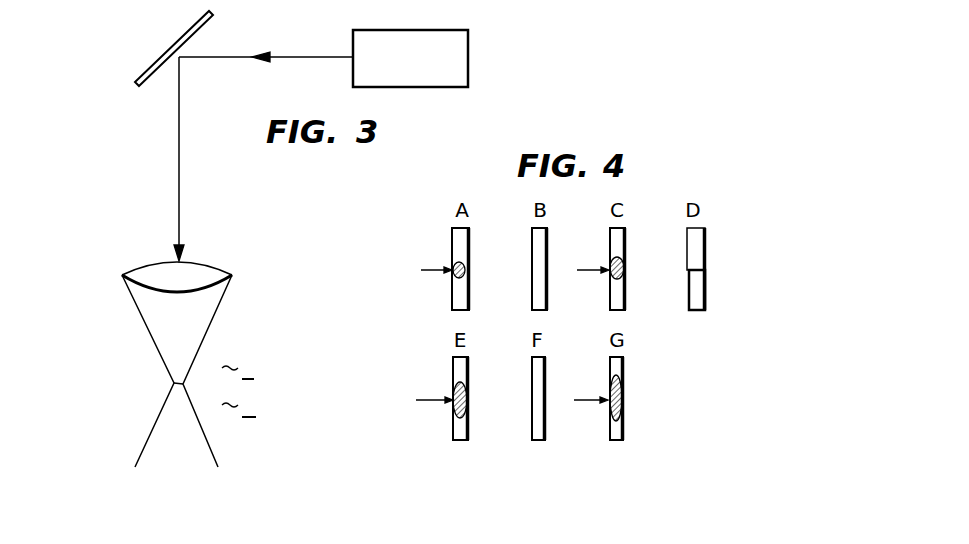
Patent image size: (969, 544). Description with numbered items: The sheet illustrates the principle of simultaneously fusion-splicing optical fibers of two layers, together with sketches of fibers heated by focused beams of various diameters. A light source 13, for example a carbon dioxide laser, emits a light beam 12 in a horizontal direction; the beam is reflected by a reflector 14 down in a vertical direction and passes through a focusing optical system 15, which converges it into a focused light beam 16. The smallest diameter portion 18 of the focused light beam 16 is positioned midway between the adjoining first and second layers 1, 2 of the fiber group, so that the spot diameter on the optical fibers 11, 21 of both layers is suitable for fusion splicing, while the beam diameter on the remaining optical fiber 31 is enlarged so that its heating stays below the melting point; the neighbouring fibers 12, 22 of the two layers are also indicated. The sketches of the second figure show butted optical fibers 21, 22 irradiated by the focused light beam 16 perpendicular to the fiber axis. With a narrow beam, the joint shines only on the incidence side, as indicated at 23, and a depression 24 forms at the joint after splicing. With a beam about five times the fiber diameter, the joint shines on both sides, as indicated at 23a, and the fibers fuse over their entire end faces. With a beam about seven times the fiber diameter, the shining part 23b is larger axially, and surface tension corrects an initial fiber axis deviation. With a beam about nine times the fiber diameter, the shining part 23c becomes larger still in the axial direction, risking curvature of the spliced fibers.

In FIG. 3, the first layer 1 is at (239, 368).
In FIG. 3, the second layer 2 is at (239, 406).
In FIG. 3, the optical fiber 1_1 11 is at (177, 367).
In FIG. 3, the light beam 12 is at (312, 56).
In FIG. 3, the light source 13 is at (468, 55).
In FIG. 3, the reflector 14 is at (197, 26).
In FIG. 3, the focusing optical system 15 is at (203, 269).
In FIG. 3, the focused light beam 16 is at (214, 312).
In FIG. 4, the focused light beam 16 is at (433, 270).
In FIG. 3, the smallest diameter portion 18 is at (174, 385).
In FIG. 3, the optical fiber 21 is at (177, 403).
In FIG. 4, the optical fiber 21 is at (469, 234).
In FIG. 3, the optical fiber 22 is at (145, 404).
In FIG. 4, the optical fiber 22 is at (462, 300).
In FIG. 4, the shining heated part 23 is at (457, 277).
In FIG. 4, the shining part 23a is at (613, 276).
In FIG. 4, the shining part 23b is at (455, 407).
In FIG. 4, the shining part 23c is at (624, 409).
In FIG. 4, the depression 24 is at (533, 268).
In FIG. 3, the optical fiber 3_1 31 is at (178, 440).